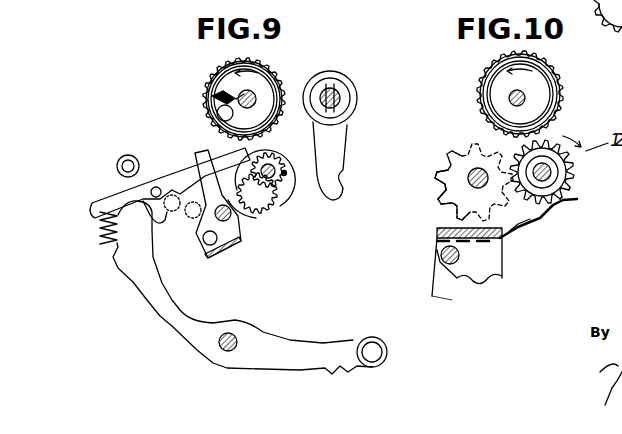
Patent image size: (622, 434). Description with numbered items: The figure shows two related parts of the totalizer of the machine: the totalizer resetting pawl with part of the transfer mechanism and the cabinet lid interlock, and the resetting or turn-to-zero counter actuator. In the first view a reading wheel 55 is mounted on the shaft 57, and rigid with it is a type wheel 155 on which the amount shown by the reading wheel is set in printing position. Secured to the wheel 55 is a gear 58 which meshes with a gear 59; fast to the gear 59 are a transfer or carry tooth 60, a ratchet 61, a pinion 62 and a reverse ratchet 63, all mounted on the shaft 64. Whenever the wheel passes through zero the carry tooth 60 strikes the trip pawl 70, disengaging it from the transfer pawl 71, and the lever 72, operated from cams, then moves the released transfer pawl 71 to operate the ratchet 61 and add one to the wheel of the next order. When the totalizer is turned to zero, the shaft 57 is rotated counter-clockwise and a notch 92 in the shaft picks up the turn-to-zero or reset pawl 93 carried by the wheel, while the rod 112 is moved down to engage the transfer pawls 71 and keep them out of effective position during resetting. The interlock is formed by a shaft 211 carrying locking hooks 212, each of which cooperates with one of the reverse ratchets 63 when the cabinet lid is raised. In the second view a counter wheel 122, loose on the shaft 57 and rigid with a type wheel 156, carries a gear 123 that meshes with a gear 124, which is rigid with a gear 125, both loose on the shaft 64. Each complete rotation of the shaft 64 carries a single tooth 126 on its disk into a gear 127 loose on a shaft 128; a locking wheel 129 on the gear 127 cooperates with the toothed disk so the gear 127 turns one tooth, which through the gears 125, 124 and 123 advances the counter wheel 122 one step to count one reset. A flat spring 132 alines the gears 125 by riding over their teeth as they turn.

In FIG. 9, the reading wheel 55 is at (276, 62).
In FIG. 9, the gear 58 is at (279, 76).
In FIG. 9, the shaft 57 is at (254, 98).
In FIG. 10, the shaft 57 is at (525, 98).
In FIG. 9, the notch 92 is at (238, 116).
In FIG. 9, the turn-to-zero or reset pawl 93 is at (215, 95).
In FIG. 9, the type wheel 155 is at (208, 108).
In FIG. 9, the shaft 211 is at (330, 90).
In FIG. 9, the locking hook 212 is at (333, 148).
In FIG. 9, the gear 59 is at (276, 141).
In FIG. 9, the pinion 62 is at (281, 156).
In FIG. 9, the reverse ratchet 63 is at (288, 174).
In FIG. 9, the shaft 64 is at (277, 190).
In FIG. 10, the shaft 64 is at (566, 164).
In FIG. 9, the ratchet 61 is at (271, 209).
In FIG. 9, the transfer or carry tooth 60 is at (239, 214).
In FIG. 9, the rod 112 is at (125, 158).
In FIG. 9, the transfer pawl 71 is at (165, 178).
In FIG. 9, the trip pawl 70 is at (200, 168).
In FIG. 9, the lever 72 is at (305, 355).
In FIG. 10, the reset or turn-to-zero counter wheel 122 is at (548, 77).
In FIG. 10, the gear 123 is at (483, 73).
In FIG. 10, the type wheel 156 is at (480, 100).
In FIG. 10, the single tooth 126 is at (556, 131).
In FIG. 10, the shaft 128 is at (477, 168).
In FIG. 10, the locking wheel 129 is at (456, 152).
In FIG. 10, the gear 127 is at (446, 189).
In FIG. 10, the gear 124 is at (574, 189).
In FIG. 10, the gear 125 is at (560, 209).
In FIG. 10, the flat spring 132 is at (533, 224).